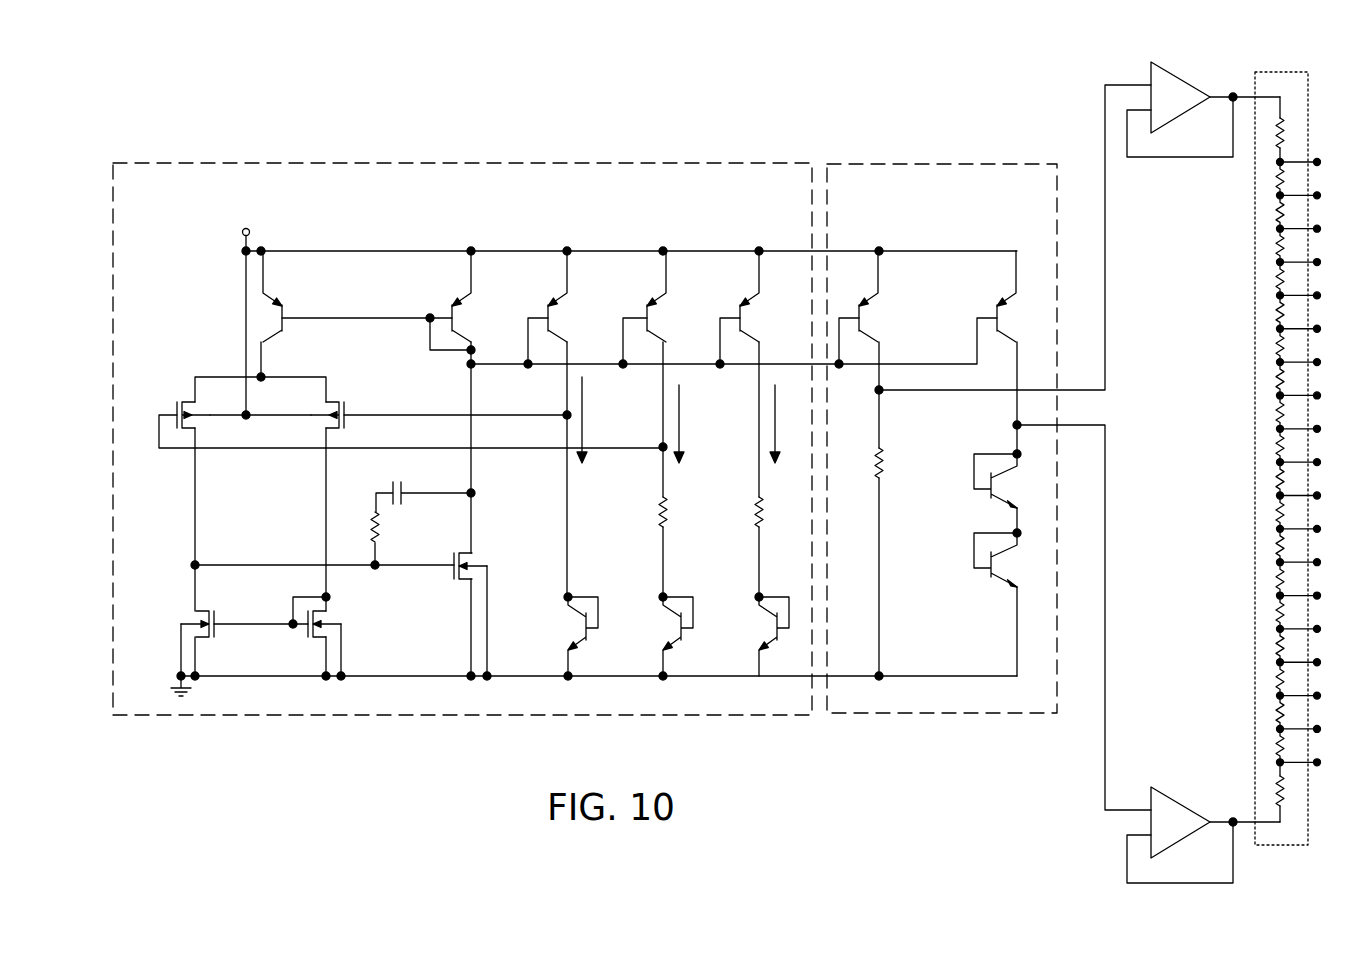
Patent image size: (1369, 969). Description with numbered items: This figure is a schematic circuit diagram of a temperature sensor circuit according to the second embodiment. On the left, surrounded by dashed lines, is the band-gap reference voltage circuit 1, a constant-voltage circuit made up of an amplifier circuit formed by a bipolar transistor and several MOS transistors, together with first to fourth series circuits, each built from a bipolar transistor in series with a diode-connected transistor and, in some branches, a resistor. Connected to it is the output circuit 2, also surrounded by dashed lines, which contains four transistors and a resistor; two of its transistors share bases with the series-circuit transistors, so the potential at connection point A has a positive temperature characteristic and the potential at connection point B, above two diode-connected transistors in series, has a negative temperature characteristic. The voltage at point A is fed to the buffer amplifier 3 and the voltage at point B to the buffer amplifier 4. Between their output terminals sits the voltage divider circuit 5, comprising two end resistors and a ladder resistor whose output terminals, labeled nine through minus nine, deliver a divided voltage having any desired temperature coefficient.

The band-gap reference voltage circuit 1 is at (293, 163).
The output circuit 2 is at (885, 163).
The buffer amplifier 3 is at (1173, 70).
The buffer amplifier 4 is at (1173, 790).
The voltage divider circuit 5 is at (1292, 72).